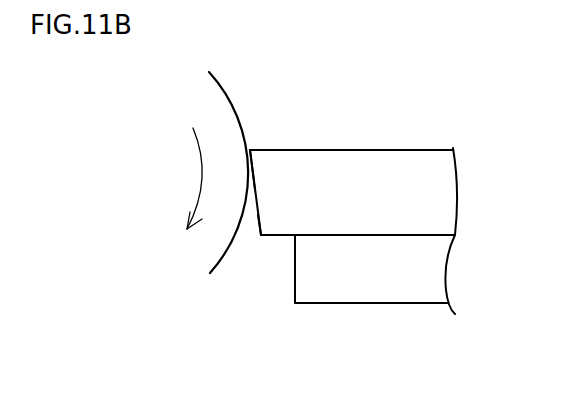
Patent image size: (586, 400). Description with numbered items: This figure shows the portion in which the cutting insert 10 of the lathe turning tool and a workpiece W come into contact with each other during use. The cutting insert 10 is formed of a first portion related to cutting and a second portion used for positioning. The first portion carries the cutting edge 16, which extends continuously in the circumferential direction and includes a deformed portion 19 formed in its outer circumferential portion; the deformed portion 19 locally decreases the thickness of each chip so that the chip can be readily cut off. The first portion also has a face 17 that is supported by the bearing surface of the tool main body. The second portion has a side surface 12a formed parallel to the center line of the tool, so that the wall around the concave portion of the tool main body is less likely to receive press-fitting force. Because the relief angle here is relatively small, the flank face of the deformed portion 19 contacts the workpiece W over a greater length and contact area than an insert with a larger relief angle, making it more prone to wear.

The cutting insert 10 is at (443, 138).
The cutting edge 16 is at (302, 150).
The deformed portion 19 is at (253, 177).
The face 17 is at (280, 238).
The side surface 12a is at (410, 305).
The web W is at (207, 255).